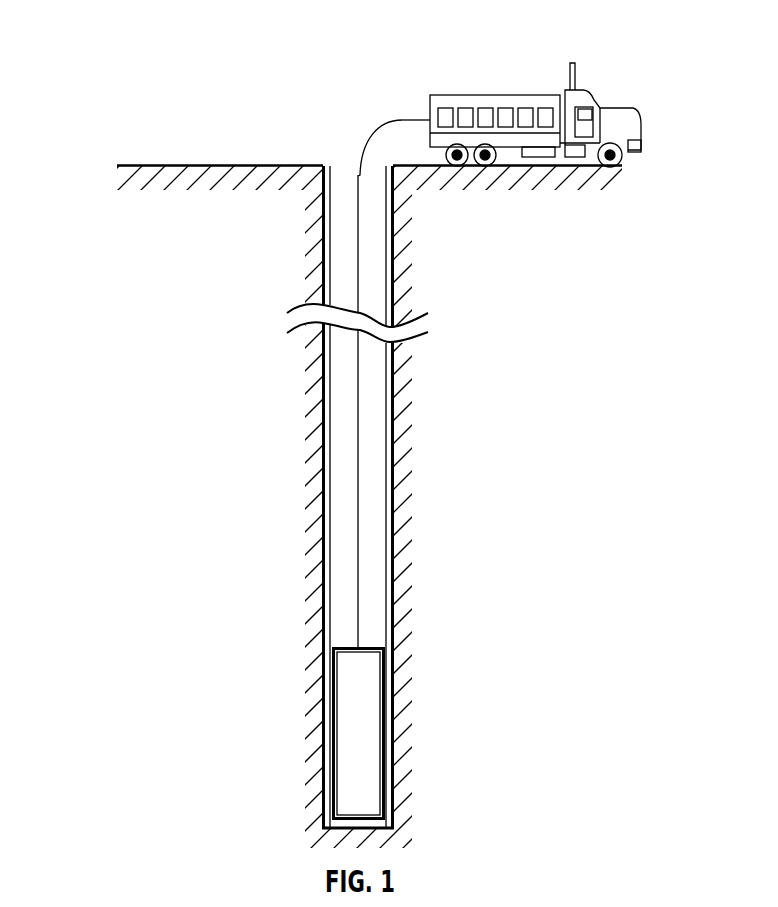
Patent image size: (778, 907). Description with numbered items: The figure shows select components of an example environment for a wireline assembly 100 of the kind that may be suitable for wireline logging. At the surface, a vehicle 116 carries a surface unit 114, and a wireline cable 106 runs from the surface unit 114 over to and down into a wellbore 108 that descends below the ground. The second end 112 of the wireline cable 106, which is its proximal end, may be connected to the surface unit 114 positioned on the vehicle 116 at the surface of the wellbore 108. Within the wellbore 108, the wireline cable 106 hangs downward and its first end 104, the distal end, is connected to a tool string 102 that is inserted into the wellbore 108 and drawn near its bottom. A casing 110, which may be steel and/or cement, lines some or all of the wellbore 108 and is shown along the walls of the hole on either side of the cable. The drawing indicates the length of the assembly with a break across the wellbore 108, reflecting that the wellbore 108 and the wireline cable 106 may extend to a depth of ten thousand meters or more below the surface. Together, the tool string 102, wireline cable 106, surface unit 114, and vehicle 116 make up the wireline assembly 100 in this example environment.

The wireline assembly 100 is at (153, 40).
The tool string 102 is at (365, 720).
The first end 104 is at (358, 582).
The wireline cable 106 is at (367, 148).
The wellbore 108 is at (369, 379).
The casing 110 is at (396, 440).
The second end 112 is at (415, 119).
The surface unit 114 is at (523, 94).
The vehicle 116 is at (642, 130).